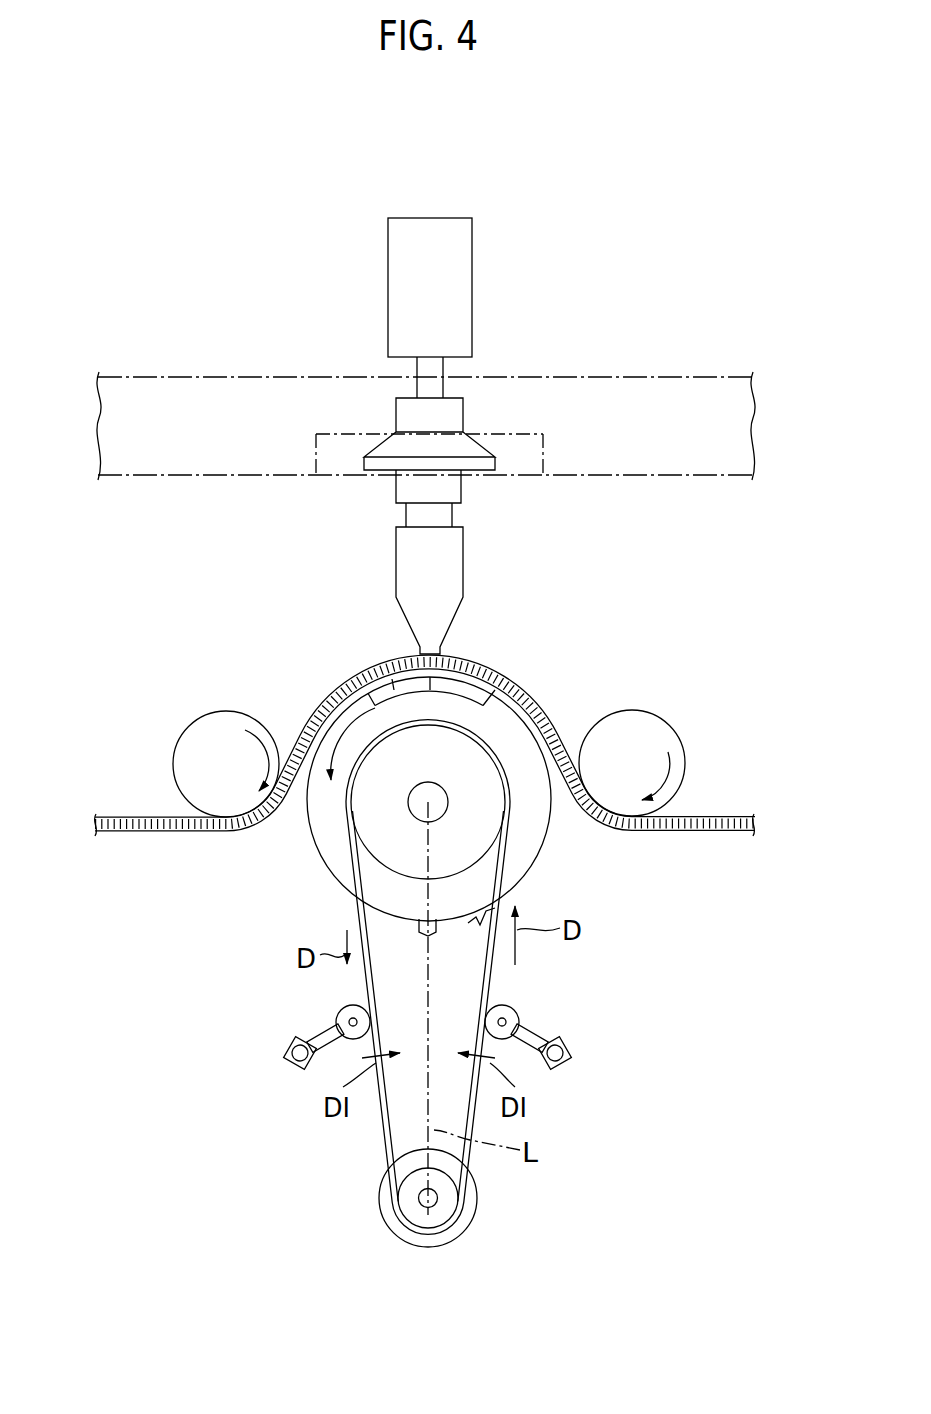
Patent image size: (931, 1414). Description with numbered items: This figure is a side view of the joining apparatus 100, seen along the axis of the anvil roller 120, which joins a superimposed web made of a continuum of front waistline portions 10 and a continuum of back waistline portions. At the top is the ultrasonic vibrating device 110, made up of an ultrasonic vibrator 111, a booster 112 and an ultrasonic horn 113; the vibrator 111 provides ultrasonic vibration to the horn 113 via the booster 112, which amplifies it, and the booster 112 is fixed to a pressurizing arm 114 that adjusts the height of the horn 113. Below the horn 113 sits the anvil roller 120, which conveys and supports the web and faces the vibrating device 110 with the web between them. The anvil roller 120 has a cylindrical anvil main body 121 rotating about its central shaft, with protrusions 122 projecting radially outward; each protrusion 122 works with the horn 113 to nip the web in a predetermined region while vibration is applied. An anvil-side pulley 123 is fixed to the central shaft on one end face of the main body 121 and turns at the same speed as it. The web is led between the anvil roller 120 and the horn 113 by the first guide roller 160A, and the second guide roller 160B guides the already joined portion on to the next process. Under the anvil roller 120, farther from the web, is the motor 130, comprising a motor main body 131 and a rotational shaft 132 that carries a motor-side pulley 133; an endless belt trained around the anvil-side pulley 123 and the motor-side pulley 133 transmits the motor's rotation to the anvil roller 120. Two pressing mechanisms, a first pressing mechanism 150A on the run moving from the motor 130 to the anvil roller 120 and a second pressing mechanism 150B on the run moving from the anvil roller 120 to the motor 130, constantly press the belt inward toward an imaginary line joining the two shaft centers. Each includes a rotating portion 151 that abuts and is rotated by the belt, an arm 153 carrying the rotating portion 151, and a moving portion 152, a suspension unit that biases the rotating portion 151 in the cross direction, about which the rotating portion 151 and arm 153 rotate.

The joining apparatus 100 is at (583, 221).
The ultrasonic vibrating device 110 is at (408, 400).
The ultrasonic vibrator 111 is at (432, 238).
The booster 112 is at (466, 430).
The ultrasonic horn 113 is at (448, 562).
The pressurizing arm 114 is at (694, 400).
The front waistline portion 10 is at (737, 815).
The second guide roller 160B is at (225, 735).
The first guide roller 160A is at (636, 735).
The anvil roller 120 is at (418, 775).
The anvil main body 121 is at (347, 883).
The protrusion 122 is at (392, 664).
The anvil-side pulley 123 is at (480, 806).
The second pressing mechanism 150B is at (404, 1041).
The first pressing mechanism 150A is at (585, 1073).
The rotating portion 151 is at (340, 1010).
The moving portion 152 is at (291, 1052).
The arm 153 is at (322, 1037).
The motor 130 is at (395, 1022).
The motor main body 131 is at (455, 1232).
The rotational shaft 132 is at (423, 1205).
The motor-side pulley 133 is at (405, 1197).